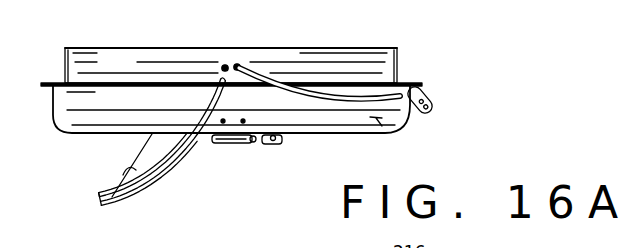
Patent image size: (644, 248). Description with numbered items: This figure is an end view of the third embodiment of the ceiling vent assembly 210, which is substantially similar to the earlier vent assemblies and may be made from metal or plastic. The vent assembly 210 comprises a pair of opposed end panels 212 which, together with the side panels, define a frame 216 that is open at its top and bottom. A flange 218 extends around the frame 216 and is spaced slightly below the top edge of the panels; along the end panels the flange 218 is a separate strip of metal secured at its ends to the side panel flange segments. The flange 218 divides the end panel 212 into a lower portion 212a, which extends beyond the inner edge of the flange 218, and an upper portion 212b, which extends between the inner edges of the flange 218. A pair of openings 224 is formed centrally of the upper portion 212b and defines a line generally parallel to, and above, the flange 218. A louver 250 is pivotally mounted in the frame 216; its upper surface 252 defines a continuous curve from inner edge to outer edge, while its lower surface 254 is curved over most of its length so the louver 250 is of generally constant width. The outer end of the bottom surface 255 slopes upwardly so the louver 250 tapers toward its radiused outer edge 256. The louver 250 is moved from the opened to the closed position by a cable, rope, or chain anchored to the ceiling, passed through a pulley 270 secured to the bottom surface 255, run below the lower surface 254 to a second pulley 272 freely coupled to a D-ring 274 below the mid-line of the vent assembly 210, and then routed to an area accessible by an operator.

The ceiling vent assembly 210 is at (460, 67).
The end panel 212 is at (124, 106).
The lower portion 212a is at (382, 126).
The upper portion 212b is at (340, 66).
The frame 216 is at (199, 38).
The flange 218 is at (412, 83).
The openings 224 is at (227, 62).
The louver 250 is at (163, 186).
The upper surface 252 is at (126, 170).
The lower surface 254 is at (182, 153).
The outer end of the bottom surface 255 is at (110, 200).
The outer edge 256 is at (95, 200).
The pulley 270 is at (428, 97).
The second pulley 272 is at (270, 147).
The D-ring 274 is at (225, 144).